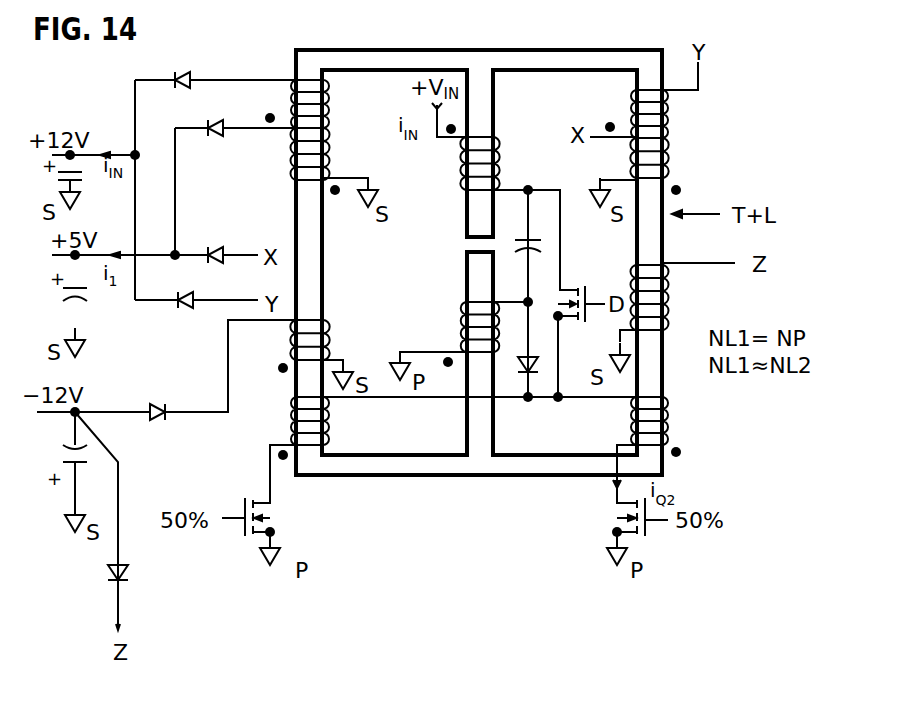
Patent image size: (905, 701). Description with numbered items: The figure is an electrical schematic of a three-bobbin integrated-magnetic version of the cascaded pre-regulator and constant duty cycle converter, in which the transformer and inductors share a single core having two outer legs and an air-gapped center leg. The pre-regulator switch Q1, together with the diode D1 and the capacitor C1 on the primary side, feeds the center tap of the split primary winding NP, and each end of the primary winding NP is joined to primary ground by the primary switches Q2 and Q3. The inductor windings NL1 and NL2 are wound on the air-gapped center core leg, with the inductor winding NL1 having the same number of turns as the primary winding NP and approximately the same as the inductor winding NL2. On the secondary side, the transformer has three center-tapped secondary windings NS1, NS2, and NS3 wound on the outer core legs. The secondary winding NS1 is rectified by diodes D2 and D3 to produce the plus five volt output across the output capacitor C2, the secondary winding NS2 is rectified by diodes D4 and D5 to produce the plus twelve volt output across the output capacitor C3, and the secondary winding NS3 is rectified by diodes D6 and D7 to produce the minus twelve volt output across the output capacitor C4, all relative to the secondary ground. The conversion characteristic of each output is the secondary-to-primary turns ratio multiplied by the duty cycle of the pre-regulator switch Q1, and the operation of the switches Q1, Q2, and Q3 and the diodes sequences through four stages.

The secondary winding NS2 is at (511, 109).
The secondary winding NS1 is at (512, 154).
The secondary winding NS3 is at (509, 312).
The primary winding NP is at (479, 421).
The inductor winding NL1 is at (507, 163).
The inductor winding NL2 is at (452, 327).
The capacitor C1 is at (552, 243).
The output capacitor C2 is at (48, 297).
The output capacitor C3 is at (46, 182).
The output capacitor C4 is at (51, 457).
The diode D1 is at (527, 395).
The diode D2 is at (234, 243).
The diode D3 is at (234, 137).
The diode D4 is at (207, 290).
The diode D5 is at (200, 90).
The diode D6 is at (163, 397).
The diode D7 is at (142, 570).
The pre-regulator switch Q1 is at (594, 318).
The primary switch Q2 is at (608, 517).
The primary switch Q3 is at (285, 517).